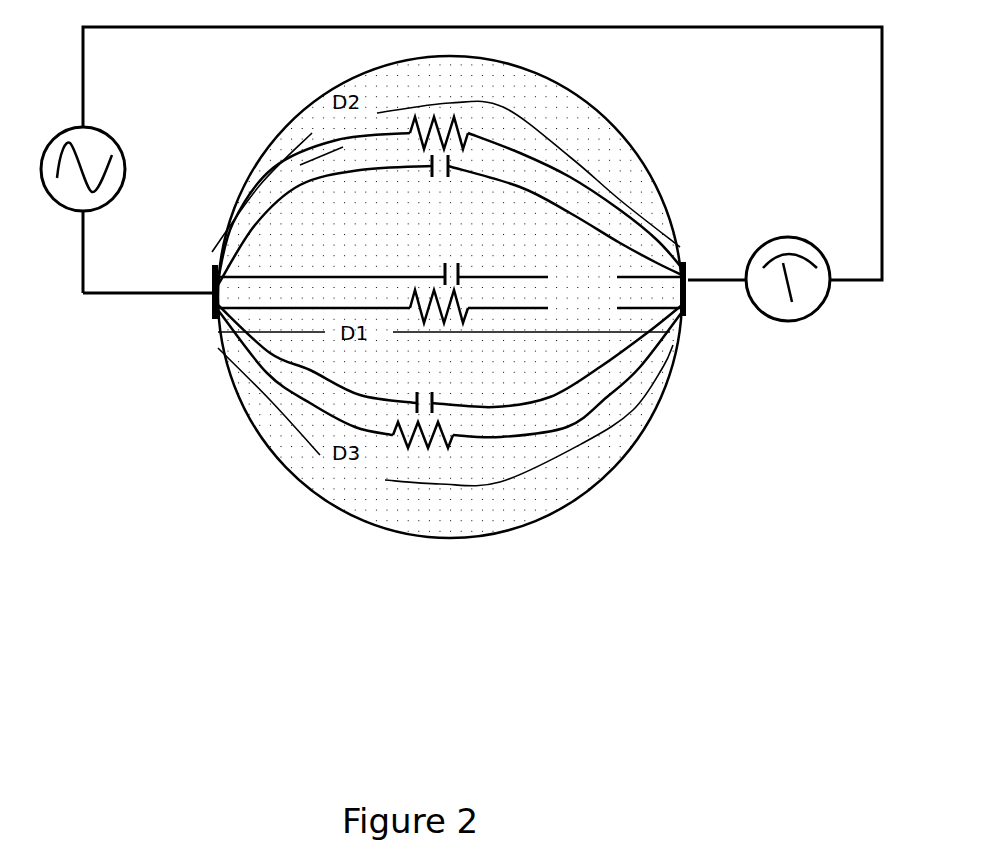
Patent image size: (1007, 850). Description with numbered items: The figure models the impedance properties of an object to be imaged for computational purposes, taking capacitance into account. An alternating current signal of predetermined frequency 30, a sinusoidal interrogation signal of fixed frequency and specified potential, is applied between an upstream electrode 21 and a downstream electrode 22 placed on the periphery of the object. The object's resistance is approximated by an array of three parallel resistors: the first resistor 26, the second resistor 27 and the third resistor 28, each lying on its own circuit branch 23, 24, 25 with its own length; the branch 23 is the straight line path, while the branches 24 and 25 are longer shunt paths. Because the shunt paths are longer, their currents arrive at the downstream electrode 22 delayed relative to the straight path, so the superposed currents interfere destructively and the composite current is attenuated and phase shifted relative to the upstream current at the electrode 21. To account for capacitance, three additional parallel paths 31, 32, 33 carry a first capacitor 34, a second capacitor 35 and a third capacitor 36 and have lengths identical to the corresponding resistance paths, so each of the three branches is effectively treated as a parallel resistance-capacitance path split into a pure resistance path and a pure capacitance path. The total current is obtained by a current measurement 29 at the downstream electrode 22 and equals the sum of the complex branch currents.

The upstream electrode 21 is at (212, 310).
The downstream electrode 22 is at (685, 267).
The straight line path circuit branch 23 is at (628, 307).
The shunt path circuit branch 24 is at (300, 172).
The shunt path circuit branch 25 is at (580, 408).
The resistor R1 26 is at (460, 307).
The resistor R2 27 is at (458, 113).
The resistor R3 28 is at (430, 447).
The current measurement 29 is at (790, 233).
The alternating current signal of predetermined frequency 30 is at (90, 213).
The capacitance path C1 31 is at (353, 268).
The capacitance path C2 32 is at (285, 217).
The capacitance path C3 33 is at (494, 408).
The capacitor C1 34 is at (443, 270).
The capacitor C2 35 is at (427, 163).
The capacitor C3 36 is at (413, 402).